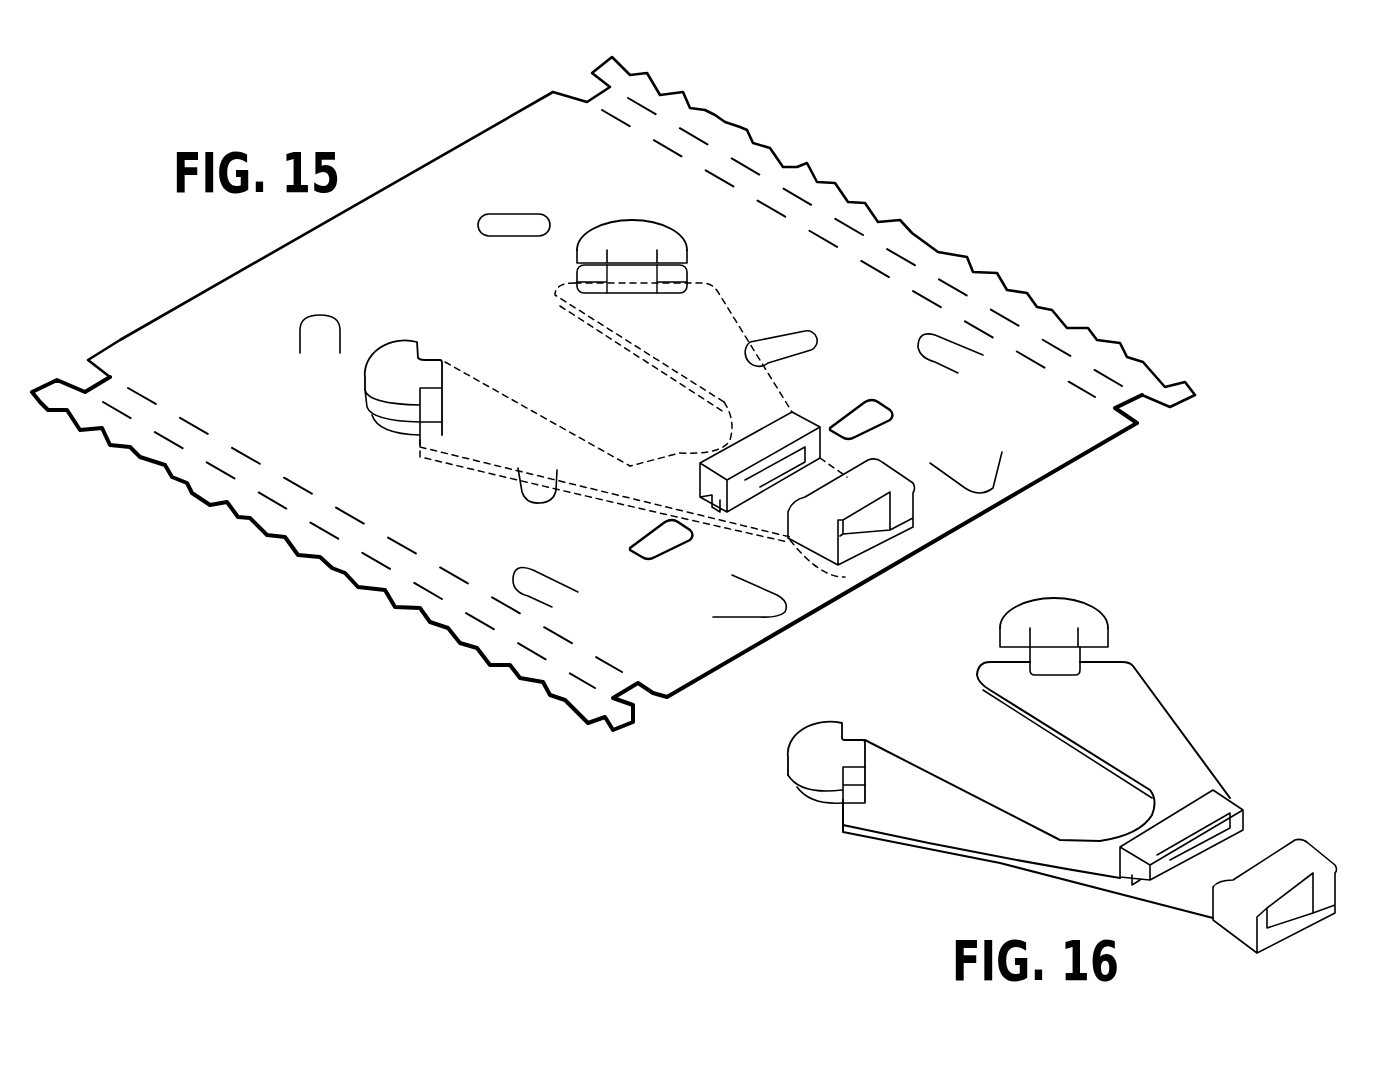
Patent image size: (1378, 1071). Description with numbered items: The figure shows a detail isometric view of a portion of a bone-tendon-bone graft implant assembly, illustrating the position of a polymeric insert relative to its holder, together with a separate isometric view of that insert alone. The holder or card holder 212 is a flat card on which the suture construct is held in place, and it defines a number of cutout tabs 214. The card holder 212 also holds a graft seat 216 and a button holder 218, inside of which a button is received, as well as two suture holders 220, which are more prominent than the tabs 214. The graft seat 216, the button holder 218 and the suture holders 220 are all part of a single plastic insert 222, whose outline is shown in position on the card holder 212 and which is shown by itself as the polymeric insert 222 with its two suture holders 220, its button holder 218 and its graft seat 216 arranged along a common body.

In FIG. 15, the card holder 212 is at (442, 155).
In FIG. 15, the cutout tabs 214 is at (320, 315).
In FIG. 15, the graft seat 216 is at (905, 468).
In FIG. 16, the graft seat 216 is at (1325, 860).
In FIG. 15, the button holder 218 is at (745, 460).
In FIG. 16, the button holder 218 is at (1230, 795).
In FIG. 15, the suture holders 220 is at (633, 220).
In FIG. 16, the suture holders 220 is at (1058, 598).
In FIG. 15, the plastic insert 222 is at (578, 493).
In FIG. 16, the plastic insert 222 is at (1178, 692).